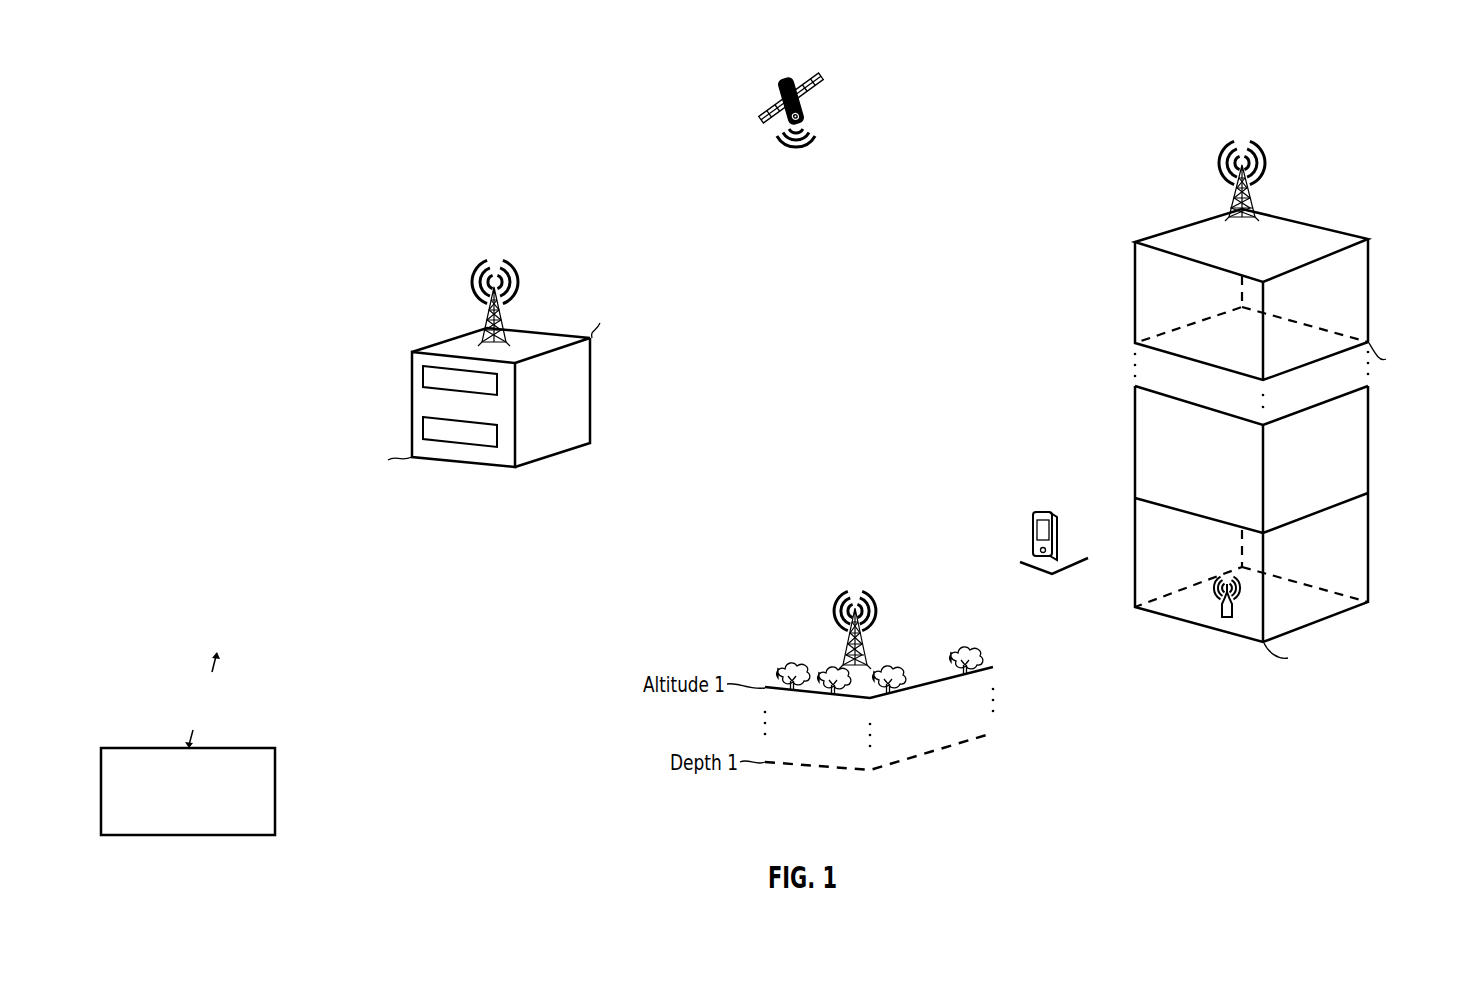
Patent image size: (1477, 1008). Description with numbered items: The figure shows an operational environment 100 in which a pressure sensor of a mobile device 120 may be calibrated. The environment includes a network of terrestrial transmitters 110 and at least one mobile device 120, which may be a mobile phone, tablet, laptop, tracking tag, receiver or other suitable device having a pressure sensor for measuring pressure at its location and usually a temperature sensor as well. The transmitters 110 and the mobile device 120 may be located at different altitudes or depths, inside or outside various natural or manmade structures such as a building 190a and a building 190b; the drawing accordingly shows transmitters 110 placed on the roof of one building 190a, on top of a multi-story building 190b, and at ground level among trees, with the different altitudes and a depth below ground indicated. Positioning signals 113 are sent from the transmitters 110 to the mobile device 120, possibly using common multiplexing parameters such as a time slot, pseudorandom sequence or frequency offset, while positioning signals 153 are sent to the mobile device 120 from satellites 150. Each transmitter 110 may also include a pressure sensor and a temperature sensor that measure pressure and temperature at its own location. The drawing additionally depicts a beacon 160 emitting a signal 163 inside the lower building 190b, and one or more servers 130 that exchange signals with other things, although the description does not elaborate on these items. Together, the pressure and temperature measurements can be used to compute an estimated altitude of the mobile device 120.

The operational environment 100 is at (140, 94).
The terrestrial transmitters 110 is at (483, 327).
The positioning signals 113 is at (470, 272).
The mobile device 120 is at (1033, 545).
The server(s) 130 is at (204, 817).
The satellites 150 is at (810, 63).
The positioning signals 153 is at (822, 134).
The beacon 160 is at (1222, 609).
The beacon signal 163 is at (1217, 583).
The building 190a is at (516, 468).
The building 190b is at (1369, 574).